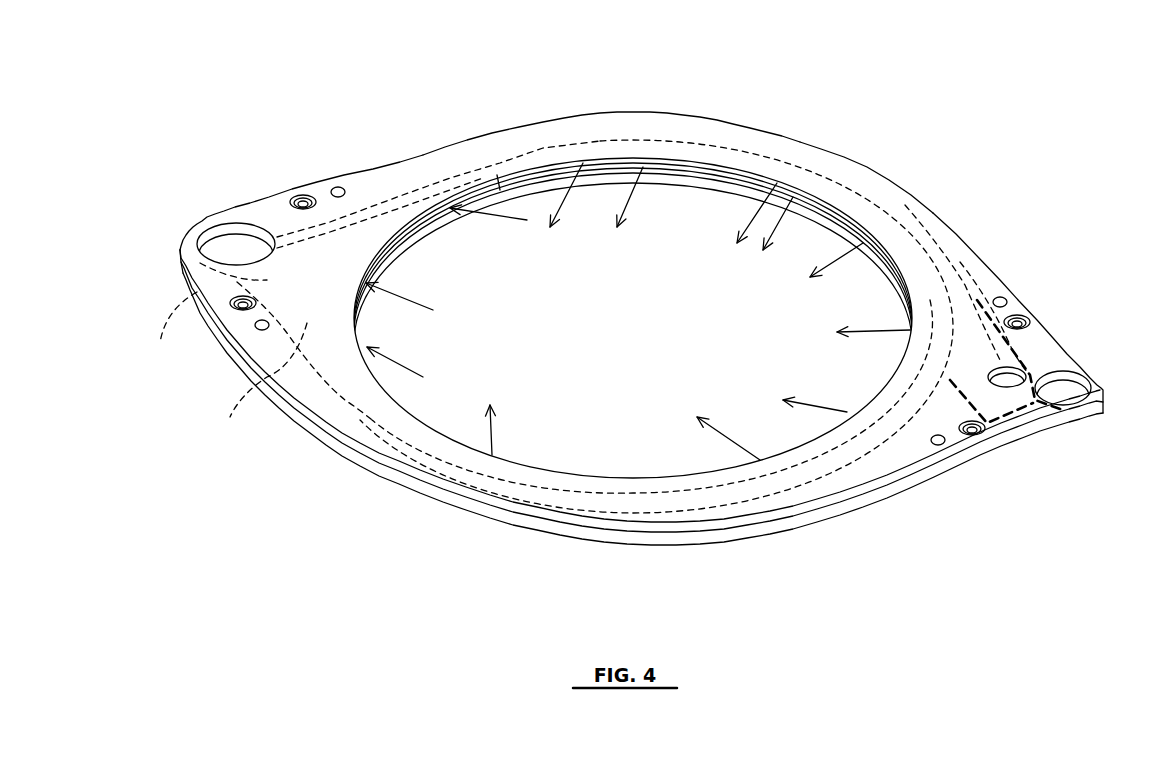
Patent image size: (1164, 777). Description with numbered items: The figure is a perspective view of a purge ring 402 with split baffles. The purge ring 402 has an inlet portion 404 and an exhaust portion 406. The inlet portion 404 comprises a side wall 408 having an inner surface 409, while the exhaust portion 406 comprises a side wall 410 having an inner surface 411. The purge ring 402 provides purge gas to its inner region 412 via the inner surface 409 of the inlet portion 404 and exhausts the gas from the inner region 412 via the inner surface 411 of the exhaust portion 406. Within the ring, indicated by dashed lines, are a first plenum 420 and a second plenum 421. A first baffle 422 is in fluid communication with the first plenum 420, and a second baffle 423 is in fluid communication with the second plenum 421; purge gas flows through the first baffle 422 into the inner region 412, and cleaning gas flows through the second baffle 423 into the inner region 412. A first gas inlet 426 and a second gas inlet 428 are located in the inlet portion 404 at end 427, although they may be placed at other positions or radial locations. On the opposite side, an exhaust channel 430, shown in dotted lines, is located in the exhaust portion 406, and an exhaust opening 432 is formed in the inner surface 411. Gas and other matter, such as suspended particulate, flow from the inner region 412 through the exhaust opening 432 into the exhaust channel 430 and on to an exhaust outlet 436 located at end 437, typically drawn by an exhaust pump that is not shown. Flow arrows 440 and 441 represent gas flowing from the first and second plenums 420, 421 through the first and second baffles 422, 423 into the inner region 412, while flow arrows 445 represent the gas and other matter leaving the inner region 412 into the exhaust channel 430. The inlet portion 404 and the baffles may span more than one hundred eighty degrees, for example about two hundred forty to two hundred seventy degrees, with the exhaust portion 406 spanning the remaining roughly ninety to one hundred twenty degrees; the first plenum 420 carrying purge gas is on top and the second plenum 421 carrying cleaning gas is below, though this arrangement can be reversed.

The purge ring 402 is at (405, 75).
The inlet portion 404 is at (883, 193).
The exhaust portion 406 is at (390, 173).
The side wall 408 is at (812, 148).
The inner surface 409 is at (793, 203).
The side wall 410 is at (463, 142).
The inner surface 411 is at (448, 216).
The inner region 412 is at (638, 333).
The first plenum 420 is at (705, 147).
The second plenum 421 is at (1033, 405).
The first baffle 422 is at (667, 165).
The second baffle 423 is at (703, 182).
The first gas inlet 426 is at (1077, 388).
The end 427 is at (1055, 338).
The second gas inlet 428 is at (990, 380).
The exhaust channel 430 is at (224, 355).
The exhaust opening 432 is at (400, 247).
The exhaust outlet 436 is at (230, 238).
The end 437 is at (252, 202).
The flow arrows 440 is at (567, 197).
The flow arrows 441 is at (637, 203).
The flow arrows 445 is at (513, 220).